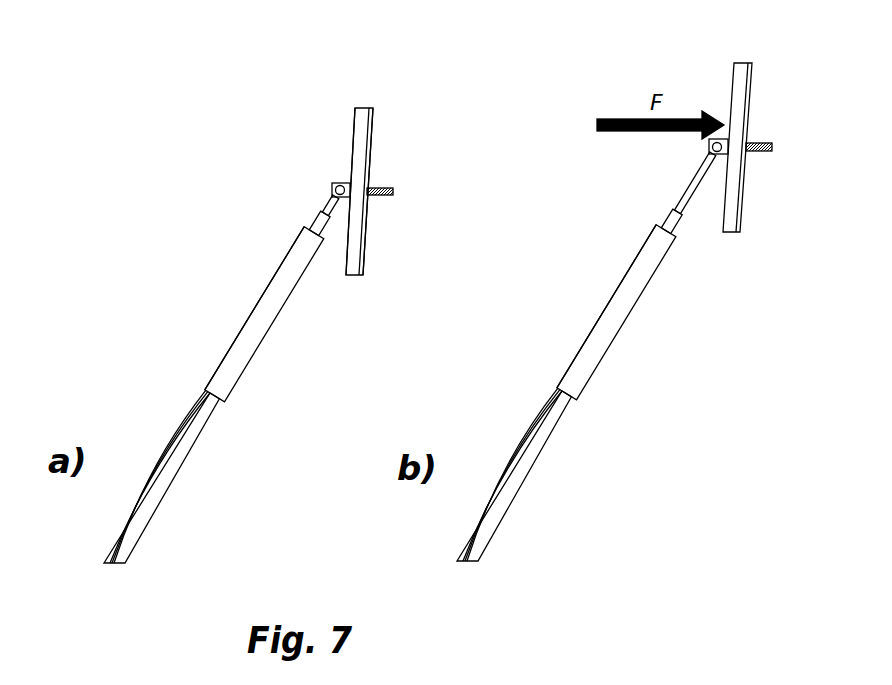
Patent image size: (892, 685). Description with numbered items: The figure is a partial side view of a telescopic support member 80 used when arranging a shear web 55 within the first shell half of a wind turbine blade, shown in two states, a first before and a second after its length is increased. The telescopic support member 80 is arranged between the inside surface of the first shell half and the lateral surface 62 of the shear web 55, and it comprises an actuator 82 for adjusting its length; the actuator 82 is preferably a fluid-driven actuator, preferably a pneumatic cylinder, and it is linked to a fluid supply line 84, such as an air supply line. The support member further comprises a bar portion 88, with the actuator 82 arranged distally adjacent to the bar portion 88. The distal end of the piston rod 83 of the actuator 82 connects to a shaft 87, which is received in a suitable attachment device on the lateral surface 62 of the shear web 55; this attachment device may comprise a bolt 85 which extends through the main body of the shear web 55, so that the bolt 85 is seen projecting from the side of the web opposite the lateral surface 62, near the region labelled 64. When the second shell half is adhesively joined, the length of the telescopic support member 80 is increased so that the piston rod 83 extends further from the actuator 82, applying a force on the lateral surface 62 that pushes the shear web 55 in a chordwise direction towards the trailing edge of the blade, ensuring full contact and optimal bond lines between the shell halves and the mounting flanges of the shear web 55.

The shear web 55 is at (362, 137).
The lateral surface 62 is at (352, 158).
The rear surface of panel 64 is at (363, 252).
The telescopic support member 80 is at (181, 332).
The actuator 82 is at (260, 307).
The piston rod 83 is at (680, 205).
The fluid supply line 84 is at (518, 458).
The bolt 85 is at (392, 187).
The shaft 87 is at (330, 192).
The bar portion 88 is at (190, 447).